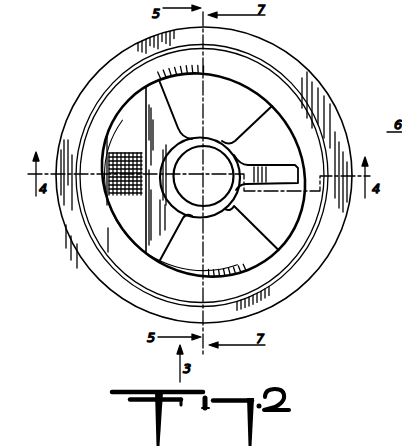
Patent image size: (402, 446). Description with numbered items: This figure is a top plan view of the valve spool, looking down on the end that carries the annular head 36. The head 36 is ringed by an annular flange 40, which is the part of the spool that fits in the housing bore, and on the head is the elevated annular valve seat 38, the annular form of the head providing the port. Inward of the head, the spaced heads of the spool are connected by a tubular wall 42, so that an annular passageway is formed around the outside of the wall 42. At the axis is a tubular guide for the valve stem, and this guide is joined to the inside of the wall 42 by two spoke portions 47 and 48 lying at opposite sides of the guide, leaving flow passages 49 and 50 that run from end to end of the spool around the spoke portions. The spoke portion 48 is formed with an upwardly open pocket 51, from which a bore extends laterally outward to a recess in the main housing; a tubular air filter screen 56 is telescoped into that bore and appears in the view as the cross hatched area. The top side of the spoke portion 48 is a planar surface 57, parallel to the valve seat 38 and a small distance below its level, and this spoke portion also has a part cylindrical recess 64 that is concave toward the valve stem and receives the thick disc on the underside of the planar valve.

The annular head 36 is at (293, 102).
The annular valve seat 38 is at (253, 87).
The annular flange 40 is at (328, 112).
The tubular wall 42 is at (206, 212).
The spoke portion 47 is at (260, 132).
The spoke portion 48 is at (166, 116).
The flow passage 49 is at (203, 174).
The flow passage 50 is at (226, 260).
The upwardly open pocket 51 is at (128, 135).
The tubular air filter screen 56 is at (128, 193).
The planar surface 57 is at (169, 222).
The part cylindrical recess 64 is at (164, 200).